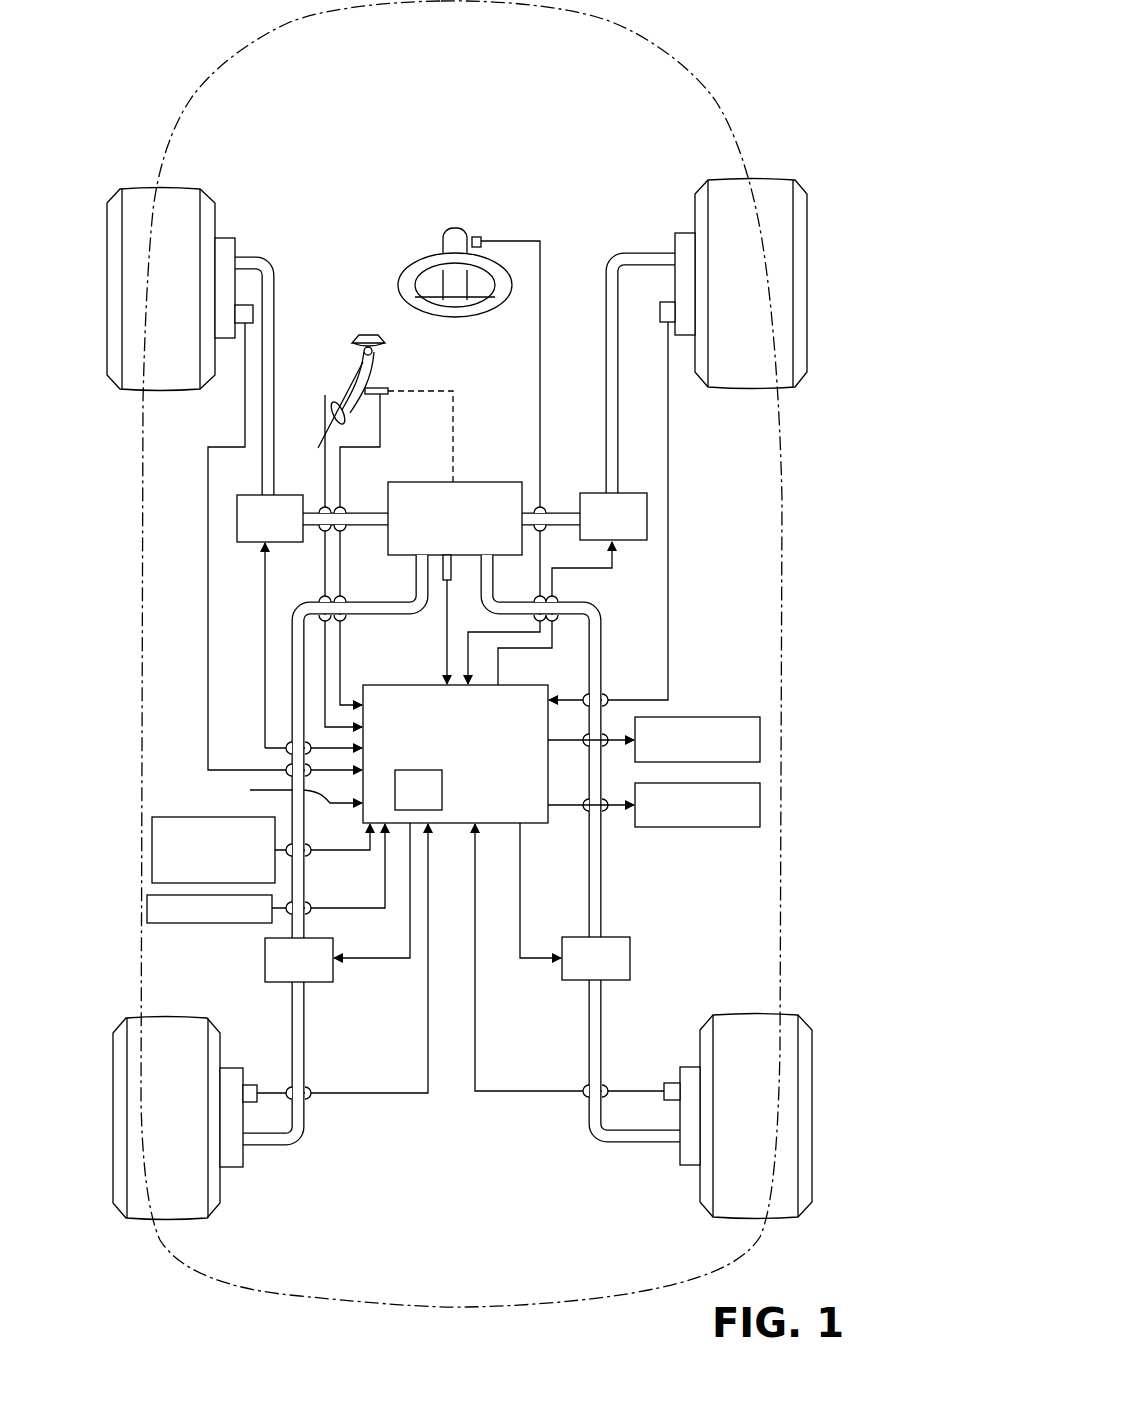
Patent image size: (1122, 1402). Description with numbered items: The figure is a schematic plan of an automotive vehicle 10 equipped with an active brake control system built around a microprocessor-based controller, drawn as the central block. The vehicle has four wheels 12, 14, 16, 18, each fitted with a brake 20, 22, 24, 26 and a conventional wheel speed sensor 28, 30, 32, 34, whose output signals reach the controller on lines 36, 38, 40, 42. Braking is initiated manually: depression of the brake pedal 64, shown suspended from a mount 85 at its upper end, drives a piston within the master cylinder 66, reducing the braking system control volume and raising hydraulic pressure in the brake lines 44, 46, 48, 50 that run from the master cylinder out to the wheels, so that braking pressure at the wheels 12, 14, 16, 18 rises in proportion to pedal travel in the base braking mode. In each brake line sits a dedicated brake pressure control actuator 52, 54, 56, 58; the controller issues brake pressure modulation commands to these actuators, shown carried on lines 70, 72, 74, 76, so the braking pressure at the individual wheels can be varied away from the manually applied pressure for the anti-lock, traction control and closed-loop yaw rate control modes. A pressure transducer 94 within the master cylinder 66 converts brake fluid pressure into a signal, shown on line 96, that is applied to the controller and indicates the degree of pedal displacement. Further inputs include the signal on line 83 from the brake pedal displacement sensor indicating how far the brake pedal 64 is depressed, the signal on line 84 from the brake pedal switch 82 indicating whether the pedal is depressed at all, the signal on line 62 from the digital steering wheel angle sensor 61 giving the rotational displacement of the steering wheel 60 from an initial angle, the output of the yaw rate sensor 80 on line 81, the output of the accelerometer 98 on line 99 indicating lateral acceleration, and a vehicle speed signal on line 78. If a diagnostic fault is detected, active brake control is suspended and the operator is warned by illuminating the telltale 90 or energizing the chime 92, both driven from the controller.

The automotive vehicle 10 is at (700, 47).
The vehicle wheel 12 is at (135, 205).
The vehicle wheel 14 is at (782, 195).
The vehicle wheel 16 is at (142, 1208).
The vehicle wheel 18 is at (788, 1200).
The brake 20 is at (228, 247).
The brake 22 is at (683, 240).
The brake 24 is at (234, 1170).
The brake 26 is at (690, 1160).
The wheel speed sensor 28 is at (250, 312).
The wheel speed sensor 30 is at (661, 305).
The wheel speed sensor 32 is at (251, 1085).
The wheel speed sensor 34 is at (670, 1083).
The line 36 is at (208, 525).
The line 38 is at (668, 472).
The line 40 is at (380, 1096).
The line 42 is at (530, 1096).
The brake line 44 is at (263, 265).
The brake line 46 is at (612, 385).
The brake line 48 is at (305, 1020).
The brake line 50 is at (590, 1016).
The brake pressure control actuator 52 is at (237, 538).
The brake pressure control actuator 54 is at (647, 514).
The brake pressure control actuator 56 is at (325, 975).
The brake pressure control actuator 58 is at (630, 957).
The steering wheel 60 is at (432, 258).
The digital steering wheel angle sensor 61 is at (478, 237).
The line 62 is at (540, 240).
The brake pedal 64 is at (318, 448).
The master cylinder 66 is at (487, 482).
The front left actuator control line 70 is at (265, 607).
The front right actuator control line 72 is at (584, 568).
The rear left actuator control line 74 is at (417, 952).
The rear right actuator control line 76 is at (520, 908).
The line 78 is at (290, 792).
The yaw rate sensor 80 is at (163, 817).
The line 81 is at (352, 850).
The brake pedal switch 82 is at (380, 395).
The line 83 is at (325, 412).
The line 84 is at (340, 640).
The brake pedal pivot 85 is at (358, 353).
The telltale 90 is at (727, 717).
The chime 92 is at (715, 827).
The pressure transducer 94 is at (447, 578).
The pressure sensor signal line 96 is at (447, 658).
The accelerometer 98 is at (228, 924).
The line 99 is at (366, 908).